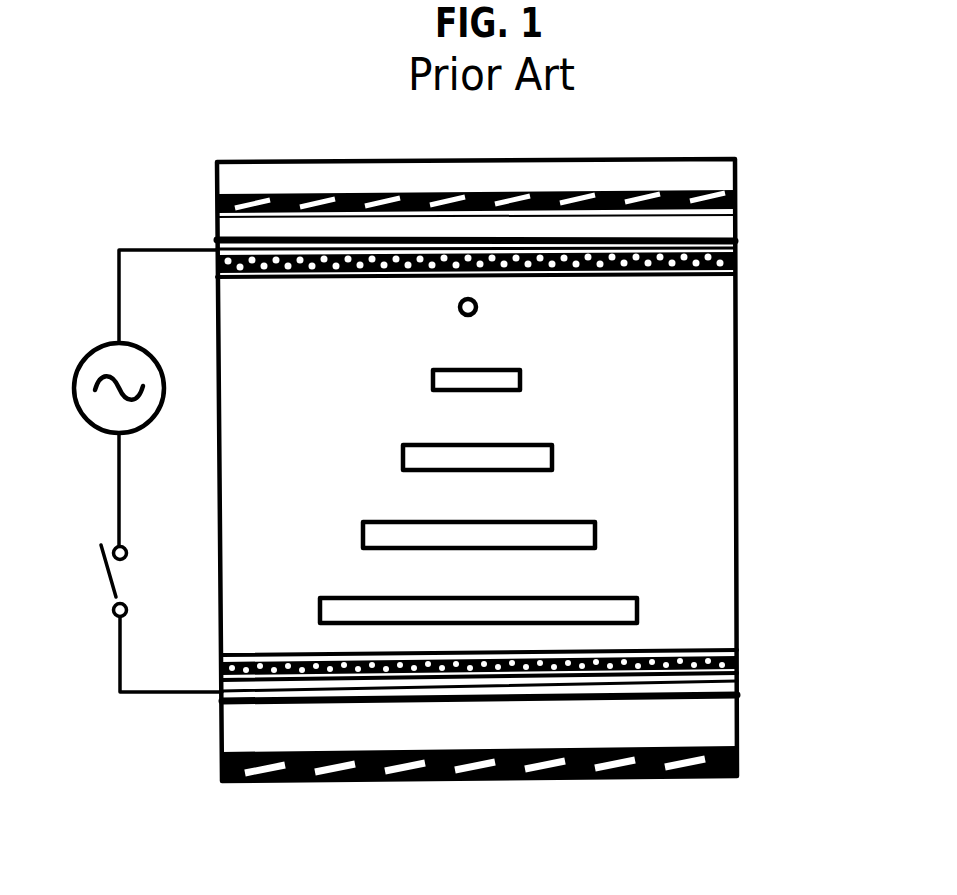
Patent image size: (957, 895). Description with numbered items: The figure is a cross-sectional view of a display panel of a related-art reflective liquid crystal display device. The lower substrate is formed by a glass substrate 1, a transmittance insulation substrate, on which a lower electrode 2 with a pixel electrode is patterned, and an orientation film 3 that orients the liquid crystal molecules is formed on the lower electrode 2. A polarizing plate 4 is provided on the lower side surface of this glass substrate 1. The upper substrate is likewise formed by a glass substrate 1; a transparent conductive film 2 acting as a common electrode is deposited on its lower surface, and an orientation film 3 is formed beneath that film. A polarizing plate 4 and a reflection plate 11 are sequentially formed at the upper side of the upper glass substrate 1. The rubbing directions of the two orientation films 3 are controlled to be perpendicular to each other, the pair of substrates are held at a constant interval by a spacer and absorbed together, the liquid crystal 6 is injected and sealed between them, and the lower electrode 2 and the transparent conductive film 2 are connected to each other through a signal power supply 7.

The reflection plate 11 is at (703, 178).
The polarizing plate 4 is at (736, 200).
The glass substrate 1 is at (720, 224).
The lower electrode / transparent conductive film 2 is at (738, 246).
The orientation film 3 is at (737, 257).
The liquid crystal 6 is at (712, 502).
The signal power supply 7 is at (112, 304).